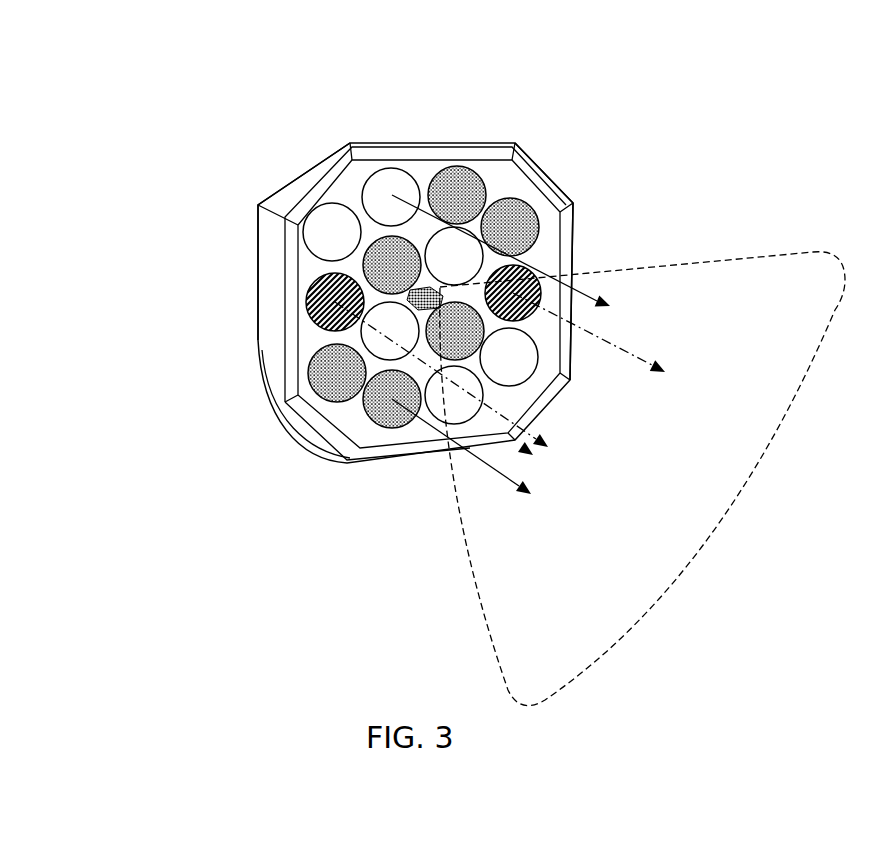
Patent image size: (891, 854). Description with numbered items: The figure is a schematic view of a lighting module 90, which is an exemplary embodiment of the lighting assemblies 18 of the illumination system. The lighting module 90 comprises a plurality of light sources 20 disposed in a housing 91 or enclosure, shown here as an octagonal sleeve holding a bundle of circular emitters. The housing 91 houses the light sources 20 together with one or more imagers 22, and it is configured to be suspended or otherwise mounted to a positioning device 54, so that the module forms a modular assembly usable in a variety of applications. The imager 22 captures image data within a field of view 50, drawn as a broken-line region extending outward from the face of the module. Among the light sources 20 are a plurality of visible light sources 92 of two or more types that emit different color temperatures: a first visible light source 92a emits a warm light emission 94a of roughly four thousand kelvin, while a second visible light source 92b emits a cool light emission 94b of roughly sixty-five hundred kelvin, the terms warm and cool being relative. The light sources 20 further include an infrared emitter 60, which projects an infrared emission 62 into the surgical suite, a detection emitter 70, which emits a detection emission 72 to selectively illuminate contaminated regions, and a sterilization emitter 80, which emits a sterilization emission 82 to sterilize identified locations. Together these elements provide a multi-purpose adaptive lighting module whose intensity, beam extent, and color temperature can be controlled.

The lighting assembly 18 is at (385, 301).
The lighting module 90 is at (312, 185).
The positioning device 54 is at (247, 204).
The housing 91 is at (562, 190).
The light source 20 is at (500, 200).
The imager 22 is at (410, 294).
The visible light source 92 is at (434, 305).
The first visible light source 92a is at (424, 194).
The second visible light source 92b is at (290, 430).
The sterilization emission 82 is at (322, 369).
The detection emission 72 is at (395, 422).
The detection emitter 70 is at (247, 302).
The sterilization emitter 80 is at (310, 316).
The infrared emitter 60 is at (533, 272).
The infrared emission 62 is at (641, 358).
The warm light emission 94a is at (586, 294).
The cool light emission 94b is at (495, 468).
The field of view 50 is at (652, 474).